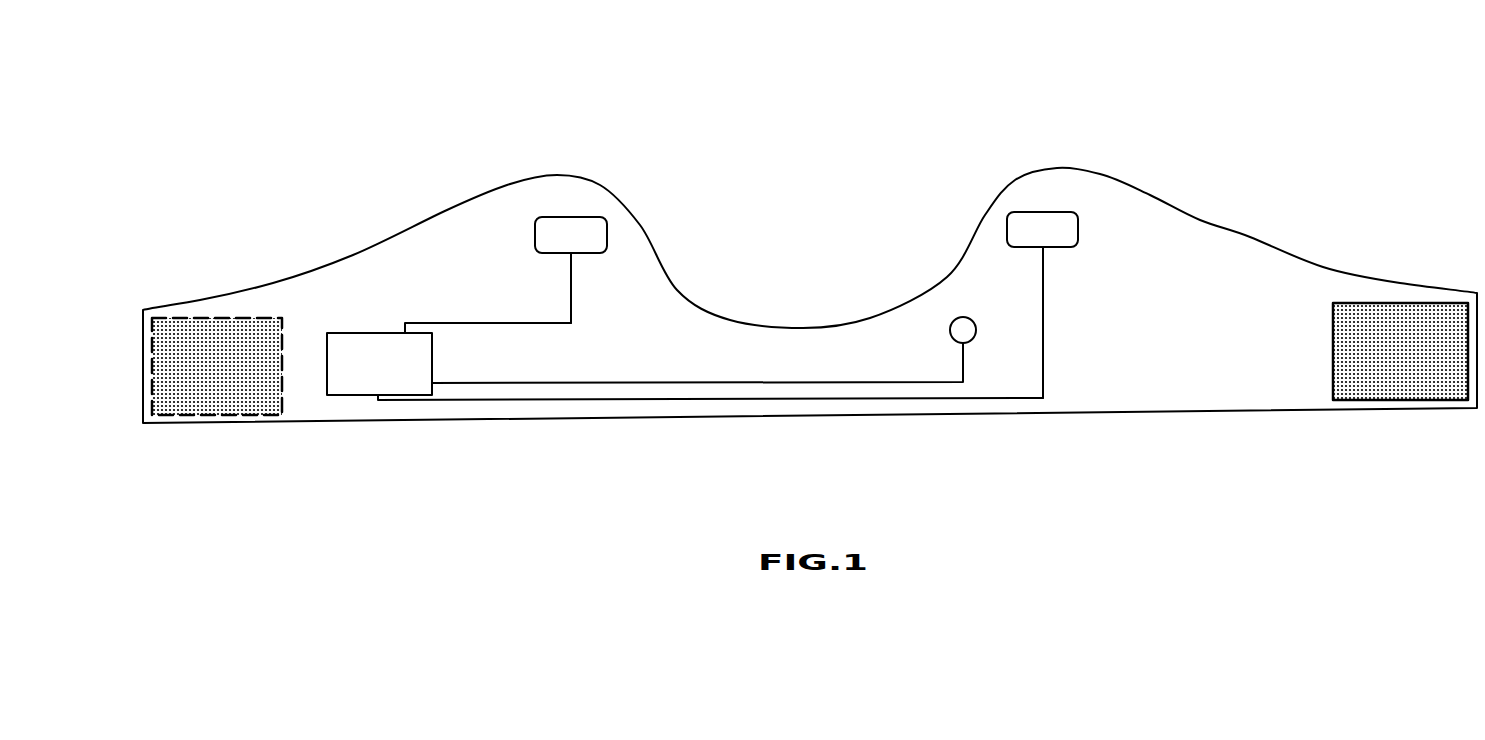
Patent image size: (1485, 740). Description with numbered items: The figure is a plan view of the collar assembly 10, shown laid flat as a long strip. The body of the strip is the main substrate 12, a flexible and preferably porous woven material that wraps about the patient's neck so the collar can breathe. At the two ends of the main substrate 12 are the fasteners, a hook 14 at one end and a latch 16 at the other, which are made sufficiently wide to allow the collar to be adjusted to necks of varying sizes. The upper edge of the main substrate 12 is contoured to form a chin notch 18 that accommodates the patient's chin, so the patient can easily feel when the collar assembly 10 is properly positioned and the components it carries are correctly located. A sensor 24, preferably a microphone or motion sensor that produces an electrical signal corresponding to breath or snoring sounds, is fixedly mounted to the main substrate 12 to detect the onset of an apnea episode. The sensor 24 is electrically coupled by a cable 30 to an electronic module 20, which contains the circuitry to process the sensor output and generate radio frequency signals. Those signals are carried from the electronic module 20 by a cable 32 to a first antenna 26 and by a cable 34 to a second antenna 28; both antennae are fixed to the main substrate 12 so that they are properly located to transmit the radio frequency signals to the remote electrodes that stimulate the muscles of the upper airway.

The collar assembly 10 is at (1218, 150).
The main substrate 12 is at (1208, 332).
The hook 14 is at (1422, 308).
The latch 16 is at (207, 327).
The chin notch 18 is at (782, 320).
The electronic module 20 is at (378, 343).
The sensor 24 is at (965, 330).
The antenna 26 is at (578, 227).
The antenna 28 is at (1033, 222).
The cable 30 is at (842, 378).
The cable 32 is at (500, 323).
The cable 34 is at (903, 398).